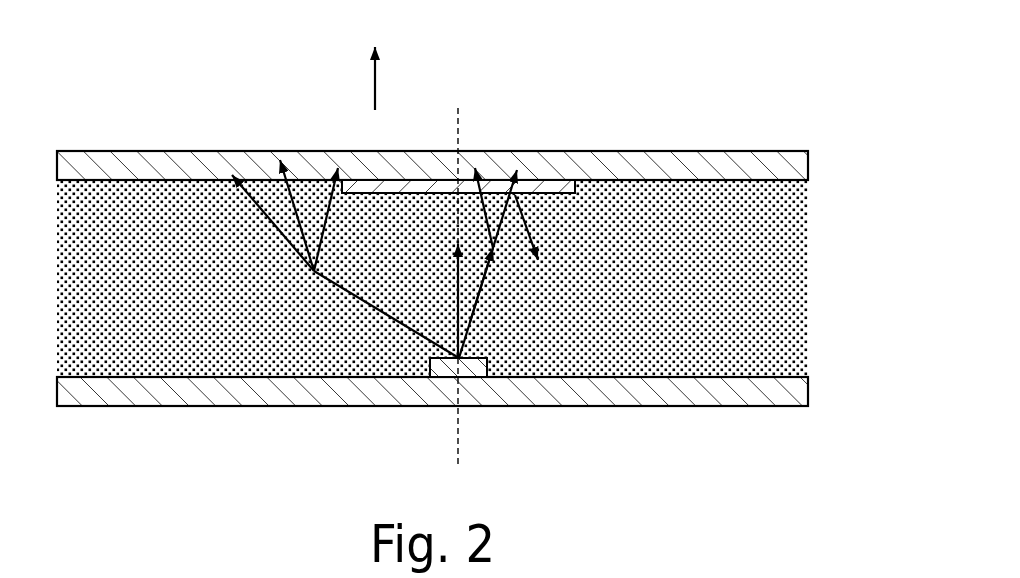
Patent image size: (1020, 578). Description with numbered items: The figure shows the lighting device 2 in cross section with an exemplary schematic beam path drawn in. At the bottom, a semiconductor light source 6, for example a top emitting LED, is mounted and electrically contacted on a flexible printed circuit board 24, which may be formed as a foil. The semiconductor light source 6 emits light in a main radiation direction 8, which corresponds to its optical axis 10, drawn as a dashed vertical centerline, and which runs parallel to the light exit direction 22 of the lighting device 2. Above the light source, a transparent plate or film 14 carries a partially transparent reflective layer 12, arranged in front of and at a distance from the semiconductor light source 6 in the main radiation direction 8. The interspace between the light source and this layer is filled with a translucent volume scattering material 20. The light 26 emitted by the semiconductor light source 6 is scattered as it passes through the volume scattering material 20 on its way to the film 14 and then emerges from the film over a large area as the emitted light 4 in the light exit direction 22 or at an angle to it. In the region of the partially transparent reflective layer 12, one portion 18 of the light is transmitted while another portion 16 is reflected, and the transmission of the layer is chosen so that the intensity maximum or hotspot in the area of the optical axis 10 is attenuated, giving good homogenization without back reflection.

The lighting device 2 is at (738, 83).
The emitted light 4 is at (287, 172).
The semiconductor light source 6 is at (480, 355).
The main radiation direction 8 is at (457, 313).
The optical axis 10 is at (456, 119).
The partially transparent reflective layer 12 is at (553, 197).
The transparent plate or film 14 is at (158, 165).
The reflected part of the light 16 is at (537, 243).
The transmitted part of the light 18 is at (517, 181).
The volume scattering material 20 is at (693, 302).
The light exit direction 22 is at (373, 86).
The printed circuit board 24 is at (648, 393).
The emitted light 26 is at (458, 313).